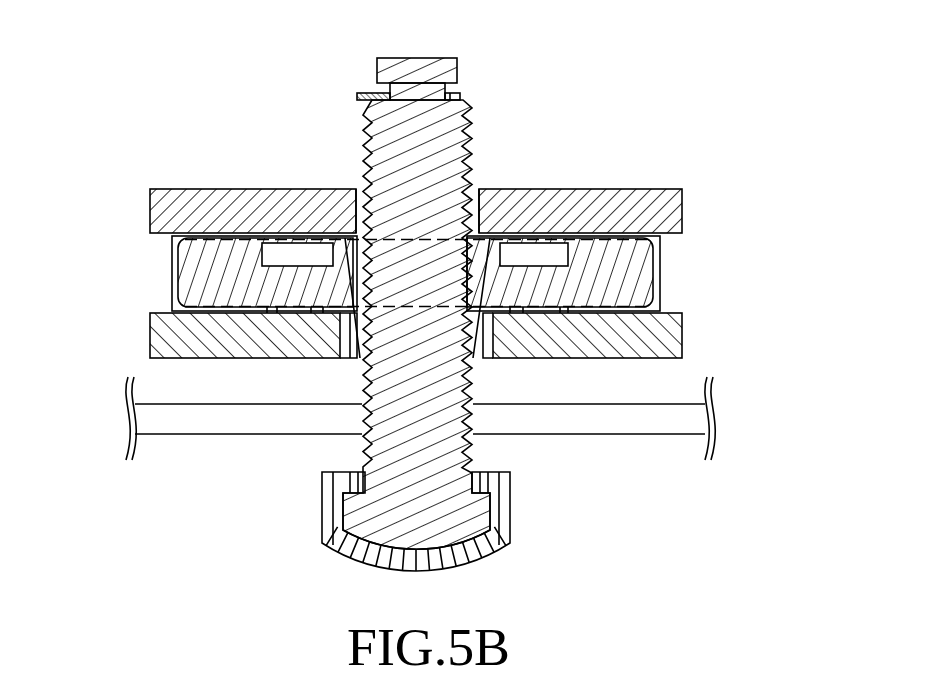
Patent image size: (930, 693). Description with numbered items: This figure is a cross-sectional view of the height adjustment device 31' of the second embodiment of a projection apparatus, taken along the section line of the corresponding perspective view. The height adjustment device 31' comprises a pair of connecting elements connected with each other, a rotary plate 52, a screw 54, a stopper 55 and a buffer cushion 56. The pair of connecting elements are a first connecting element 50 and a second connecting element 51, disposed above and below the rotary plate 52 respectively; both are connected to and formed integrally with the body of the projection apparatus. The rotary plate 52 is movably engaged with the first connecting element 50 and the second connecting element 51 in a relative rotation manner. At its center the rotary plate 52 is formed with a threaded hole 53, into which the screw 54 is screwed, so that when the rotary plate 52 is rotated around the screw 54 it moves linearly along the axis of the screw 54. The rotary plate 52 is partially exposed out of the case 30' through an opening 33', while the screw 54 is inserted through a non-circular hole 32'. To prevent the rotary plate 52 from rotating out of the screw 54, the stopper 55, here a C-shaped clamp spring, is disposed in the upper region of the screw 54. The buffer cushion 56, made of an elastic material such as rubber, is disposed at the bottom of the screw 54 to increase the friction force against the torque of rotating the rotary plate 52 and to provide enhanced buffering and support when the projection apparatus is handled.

The case 30' is at (457, 407).
The height adjustment device 31' is at (423, 286).
The non-circular hole 32' is at (446, 324).
The opening 33' is at (381, 251).
The first connecting element 50 is at (197, 205).
The second connecting element 51 is at (328, 358).
The rotary plate 52 is at (632, 278).
The threaded hole 53 is at (476, 198).
The screw 54 is at (410, 65).
The stopper 55 is at (358, 96).
The buffer cushion 56 is at (502, 510).